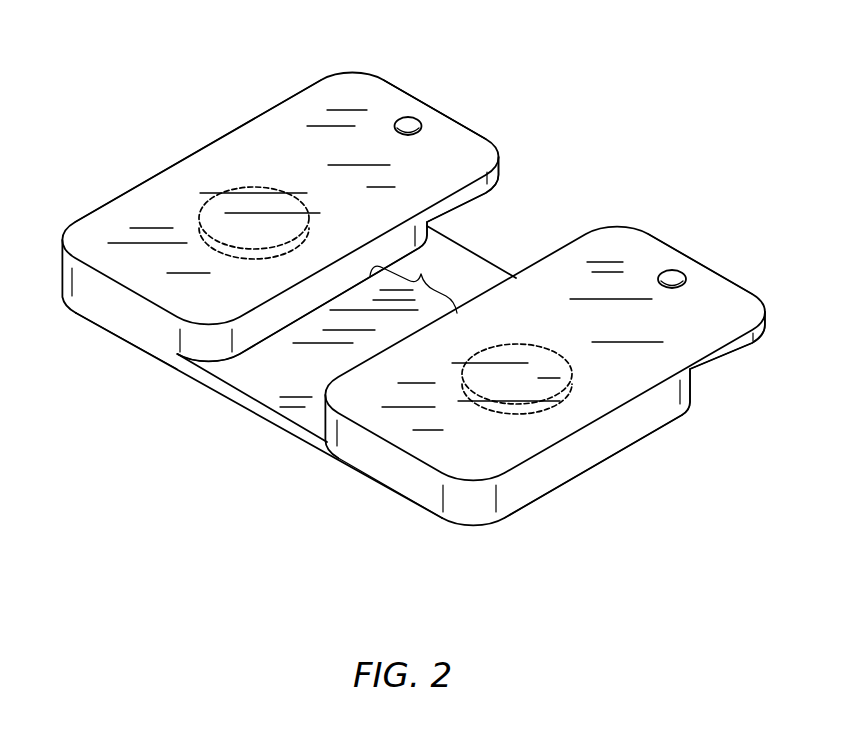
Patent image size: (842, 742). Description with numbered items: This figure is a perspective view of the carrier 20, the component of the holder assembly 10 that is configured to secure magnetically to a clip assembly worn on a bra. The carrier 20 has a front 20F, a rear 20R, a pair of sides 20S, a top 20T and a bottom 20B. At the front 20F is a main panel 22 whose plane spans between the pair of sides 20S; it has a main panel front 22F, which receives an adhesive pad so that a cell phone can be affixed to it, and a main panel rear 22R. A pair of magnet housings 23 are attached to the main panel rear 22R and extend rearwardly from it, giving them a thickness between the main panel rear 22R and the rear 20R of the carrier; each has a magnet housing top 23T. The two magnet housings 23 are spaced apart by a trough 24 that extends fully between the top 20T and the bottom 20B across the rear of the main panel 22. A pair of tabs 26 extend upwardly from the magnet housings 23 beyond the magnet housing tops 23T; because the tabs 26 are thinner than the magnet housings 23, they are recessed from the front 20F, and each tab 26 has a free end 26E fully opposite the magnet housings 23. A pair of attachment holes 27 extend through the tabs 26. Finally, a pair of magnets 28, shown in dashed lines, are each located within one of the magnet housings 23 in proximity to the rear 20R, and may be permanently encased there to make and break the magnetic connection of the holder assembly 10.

The holder assembly 10 is at (279, 466).
The carrier 20 is at (127, 318).
The top 20T is at (493, 141).
The bottom 20B is at (116, 355).
The pair of sides 20S is at (127, 193).
The front 20F is at (410, 503).
The rear 20R is at (337, 87).
The main panel 22 is at (488, 274).
The main panel front 22F is at (273, 427).
The main panel rear 22R is at (495, 264).
The magnet housings 23 is at (372, 358).
The magnet housing top 23T is at (693, 385).
The trough 24 is at (413, 283).
The tabs 26 is at (497, 176).
The free end 26E is at (393, 84).
The attachment holes 27 is at (419, 117).
The magnets 28 is at (228, 187).